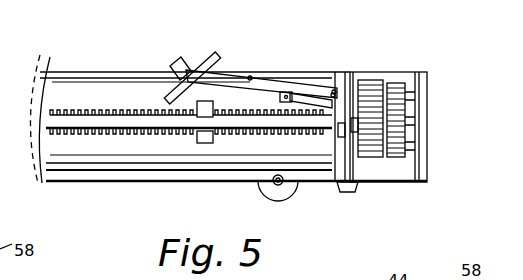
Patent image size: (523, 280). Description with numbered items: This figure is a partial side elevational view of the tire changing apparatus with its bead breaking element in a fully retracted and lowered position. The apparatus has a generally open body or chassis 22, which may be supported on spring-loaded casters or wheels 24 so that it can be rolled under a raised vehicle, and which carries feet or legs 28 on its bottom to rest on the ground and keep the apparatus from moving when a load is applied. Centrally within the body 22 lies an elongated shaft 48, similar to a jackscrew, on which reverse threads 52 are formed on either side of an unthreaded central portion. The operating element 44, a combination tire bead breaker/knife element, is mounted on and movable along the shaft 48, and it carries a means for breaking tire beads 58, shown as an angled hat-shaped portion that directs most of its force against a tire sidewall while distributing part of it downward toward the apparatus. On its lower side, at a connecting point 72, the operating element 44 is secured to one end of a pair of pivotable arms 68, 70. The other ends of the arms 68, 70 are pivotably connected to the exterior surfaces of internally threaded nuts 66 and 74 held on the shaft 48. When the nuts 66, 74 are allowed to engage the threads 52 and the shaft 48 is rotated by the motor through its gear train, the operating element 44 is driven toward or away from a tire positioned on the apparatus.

The body 22 is at (427, 64).
The caster 24 is at (293, 196).
The feet 28 is at (357, 192).
The operating element 44 is at (226, 61).
The elongated shaft 48 is at (44, 78).
The reverse threads 52 is at (115, 108).
The means for breaking tire beads 58 is at (207, 52).
The internally threaded nut 66 is at (342, 108).
The pivotable arm 68 is at (232, 113).
The pivotable arm 70 is at (309, 100).
The connecting point 72 is at (284, 92).
The internally threaded nut 74 is at (205, 145).